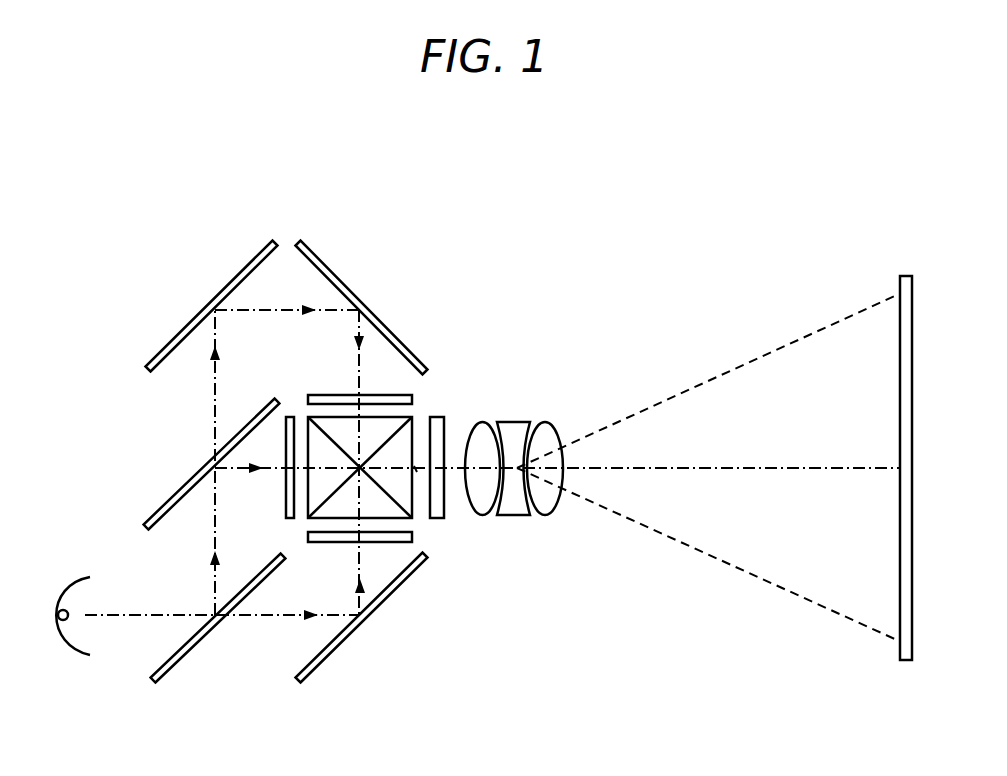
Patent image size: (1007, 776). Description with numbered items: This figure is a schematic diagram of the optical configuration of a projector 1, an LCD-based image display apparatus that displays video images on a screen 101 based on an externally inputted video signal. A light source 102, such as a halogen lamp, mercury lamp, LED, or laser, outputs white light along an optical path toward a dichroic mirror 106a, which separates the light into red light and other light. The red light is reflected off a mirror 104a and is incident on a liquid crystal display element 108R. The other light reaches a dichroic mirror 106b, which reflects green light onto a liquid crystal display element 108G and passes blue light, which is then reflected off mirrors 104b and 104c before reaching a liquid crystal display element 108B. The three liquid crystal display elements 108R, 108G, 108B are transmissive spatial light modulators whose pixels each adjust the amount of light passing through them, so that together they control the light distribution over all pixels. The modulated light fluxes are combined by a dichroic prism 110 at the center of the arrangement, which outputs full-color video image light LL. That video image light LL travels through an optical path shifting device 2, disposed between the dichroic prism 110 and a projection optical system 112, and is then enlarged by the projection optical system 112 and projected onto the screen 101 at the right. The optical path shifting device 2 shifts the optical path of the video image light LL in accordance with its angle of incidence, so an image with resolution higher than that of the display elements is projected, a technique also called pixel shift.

The projector 1 is at (766, 212).
The light source 102 is at (67, 652).
The mirror 104a is at (330, 660).
The mirror 104b is at (228, 282).
The mirror 104c is at (342, 278).
The dichroic mirror 106a is at (182, 662).
The dichroic mirror 106b is at (165, 500).
The liquid crystal display element 108R is at (335, 543).
The liquid crystal display element 108G is at (284, 484).
The liquid crystal display element 108B is at (415, 398).
The dichroic prism 110 is at (413, 422).
The optical path shifting device 2 is at (447, 502).
The video image light LL is at (414, 466).
The projection optical system 112 is at (562, 518).
The screen 101 is at (905, 660).